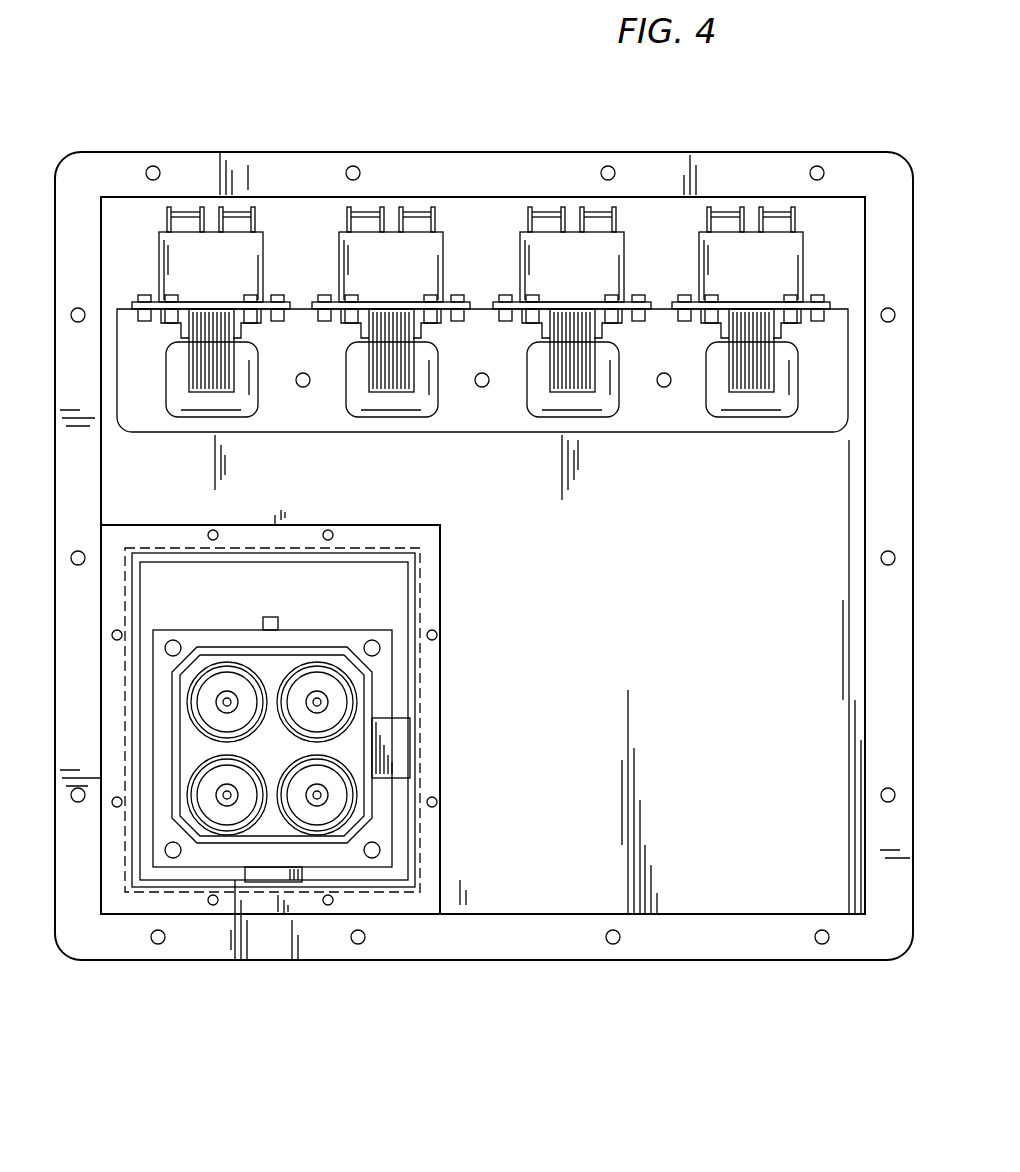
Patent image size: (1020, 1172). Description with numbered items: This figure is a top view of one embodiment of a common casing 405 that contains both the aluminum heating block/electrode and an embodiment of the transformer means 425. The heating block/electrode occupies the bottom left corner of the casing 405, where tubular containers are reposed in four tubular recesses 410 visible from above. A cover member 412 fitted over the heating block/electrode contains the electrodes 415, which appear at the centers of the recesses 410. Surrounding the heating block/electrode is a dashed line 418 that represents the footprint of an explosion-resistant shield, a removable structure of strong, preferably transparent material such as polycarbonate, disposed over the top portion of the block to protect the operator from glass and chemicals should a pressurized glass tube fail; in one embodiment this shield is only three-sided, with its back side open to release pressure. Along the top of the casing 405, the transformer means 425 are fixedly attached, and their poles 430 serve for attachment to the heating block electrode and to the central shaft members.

The common casing 405 is at (735, 962).
The tubular recesses 410 is at (327, 660).
The cover member 412 is at (190, 630).
The electrodes 415 is at (317, 702).
The dashed line 418 is at (420, 572).
The transformer means 425 is at (348, 405).
The poles 430 is at (272, 212).